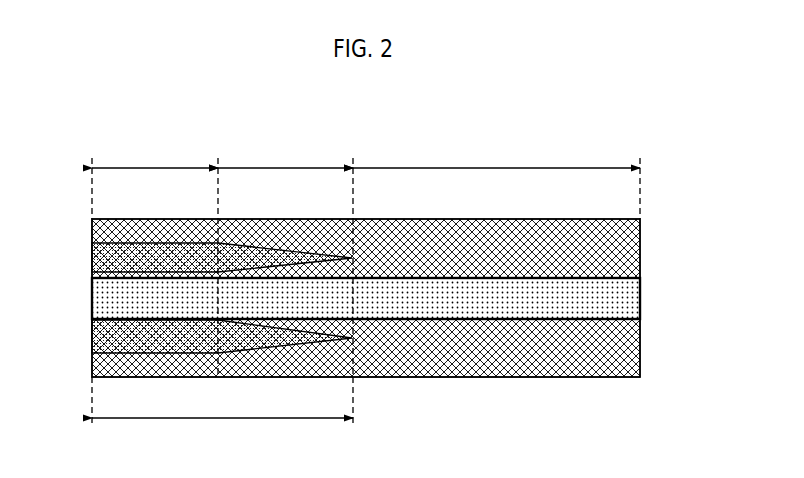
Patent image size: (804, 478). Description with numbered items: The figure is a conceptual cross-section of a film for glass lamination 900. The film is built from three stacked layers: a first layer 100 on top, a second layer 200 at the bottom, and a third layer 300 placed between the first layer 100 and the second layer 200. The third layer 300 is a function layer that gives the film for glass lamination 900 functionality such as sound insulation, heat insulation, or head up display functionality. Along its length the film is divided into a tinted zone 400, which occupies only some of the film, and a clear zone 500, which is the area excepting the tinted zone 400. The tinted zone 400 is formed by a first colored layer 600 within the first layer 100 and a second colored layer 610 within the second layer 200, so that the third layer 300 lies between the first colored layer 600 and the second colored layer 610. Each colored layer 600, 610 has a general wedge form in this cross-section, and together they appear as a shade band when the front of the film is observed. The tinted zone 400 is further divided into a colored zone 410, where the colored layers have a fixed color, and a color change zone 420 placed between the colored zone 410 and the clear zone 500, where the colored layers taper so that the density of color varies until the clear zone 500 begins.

The first layer 100 is at (604, 247).
The second layer 200 is at (606, 353).
The third layer 300 is at (618, 299).
The tinted zone 400 is at (222, 413).
The colored zone 410 is at (155, 257).
The color change zone 420 is at (285, 257).
The clear zone 500 is at (496, 178).
The first colored layer 600 is at (100, 262).
The second colored layer 610 is at (100, 340).
The film for glass lamination 900 is at (668, 112).